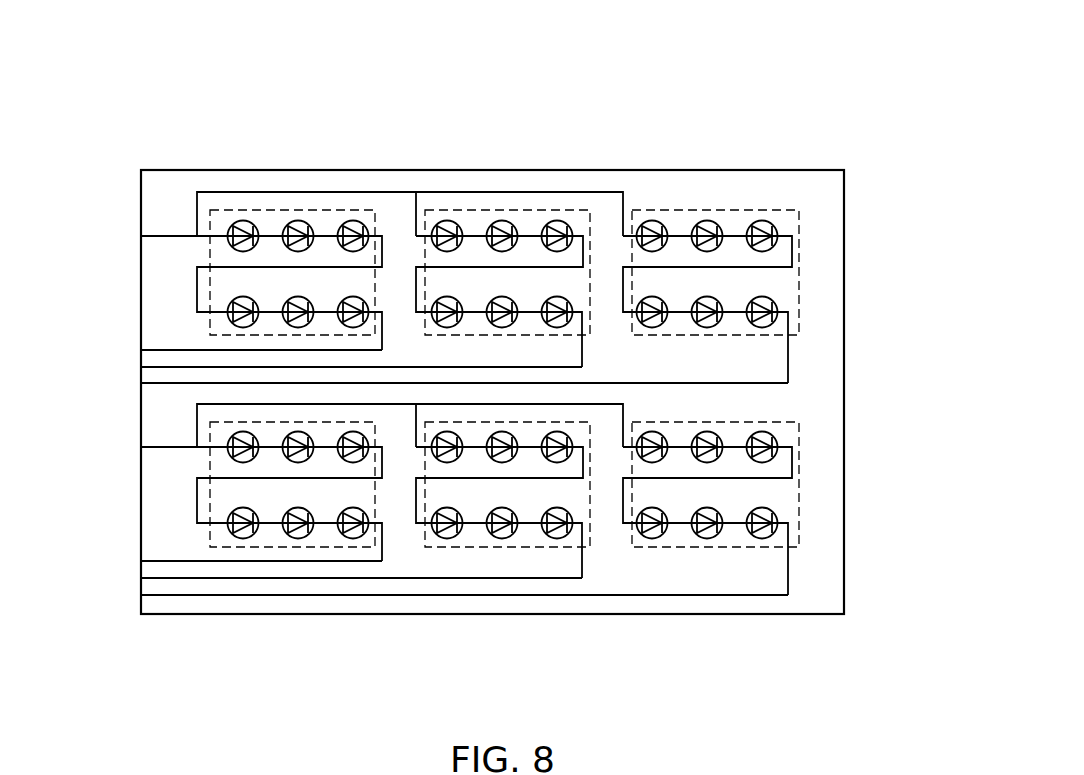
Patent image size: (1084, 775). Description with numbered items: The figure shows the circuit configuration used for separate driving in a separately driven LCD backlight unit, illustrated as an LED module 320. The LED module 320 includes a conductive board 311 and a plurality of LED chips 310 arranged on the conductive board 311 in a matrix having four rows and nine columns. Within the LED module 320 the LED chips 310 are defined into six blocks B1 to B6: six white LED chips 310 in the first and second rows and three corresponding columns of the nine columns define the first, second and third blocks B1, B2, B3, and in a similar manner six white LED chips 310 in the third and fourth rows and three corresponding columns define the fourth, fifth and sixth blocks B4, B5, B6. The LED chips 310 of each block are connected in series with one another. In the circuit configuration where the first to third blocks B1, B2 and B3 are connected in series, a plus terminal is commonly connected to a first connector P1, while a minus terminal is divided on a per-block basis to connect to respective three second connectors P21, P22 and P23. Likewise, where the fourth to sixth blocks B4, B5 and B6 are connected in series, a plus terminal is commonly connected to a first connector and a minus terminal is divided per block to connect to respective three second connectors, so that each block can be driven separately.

The LED module 320 is at (800, 108).
The conductive board 311 is at (845, 248).
The LED chip 310 is at (651, 220).
The first block B1 is at (292, 210).
The second block B2 is at (505, 210).
The third block B3 is at (703, 233).
The fourth block B4 is at (303, 548).
The fifth block B5 is at (518, 548).
The sixth block B6 is at (727, 548).
The first connector P1 is at (174, 335).
The second connector P21 is at (237, 340).
The second connector P22 is at (337, 362).
The second connector P23 is at (440, 384).